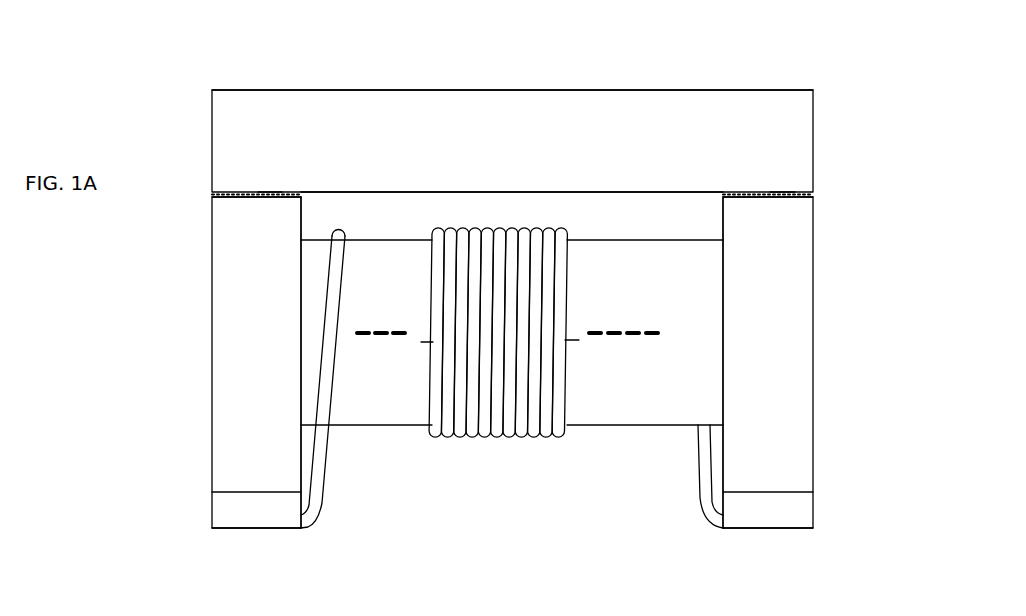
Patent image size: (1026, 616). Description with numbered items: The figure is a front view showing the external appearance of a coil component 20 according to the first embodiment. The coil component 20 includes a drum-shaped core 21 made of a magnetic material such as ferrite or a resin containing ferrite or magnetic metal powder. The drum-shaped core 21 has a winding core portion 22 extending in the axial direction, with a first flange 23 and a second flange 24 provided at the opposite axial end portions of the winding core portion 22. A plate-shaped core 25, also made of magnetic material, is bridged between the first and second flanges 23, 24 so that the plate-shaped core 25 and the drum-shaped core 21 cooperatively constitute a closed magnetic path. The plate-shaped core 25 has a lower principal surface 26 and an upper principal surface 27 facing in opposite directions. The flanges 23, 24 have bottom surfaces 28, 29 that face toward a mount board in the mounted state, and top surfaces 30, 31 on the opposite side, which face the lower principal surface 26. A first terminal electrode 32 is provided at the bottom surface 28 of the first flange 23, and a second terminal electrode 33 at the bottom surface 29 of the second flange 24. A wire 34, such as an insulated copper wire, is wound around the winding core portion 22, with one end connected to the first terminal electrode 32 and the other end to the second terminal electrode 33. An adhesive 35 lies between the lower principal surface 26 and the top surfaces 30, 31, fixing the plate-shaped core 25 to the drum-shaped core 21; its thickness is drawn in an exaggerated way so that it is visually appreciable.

The coil component 20 is at (522, 49).
The drum-shaped core 21 is at (822, 236).
The winding core portion 22 is at (618, 405).
The first flange 23 is at (210, 382).
The second flange 24 is at (817, 401).
The plate-shaped core 25 is at (818, 118).
The lower principal surface 26 is at (687, 192).
The upper principal surface 27 is at (663, 90).
The bottom surface 28 is at (248, 530).
The bottom surface 29 is at (768, 530).
The top surface 30 is at (270, 192).
The top surface 31 is at (783, 195).
The first terminal electrode 32 is at (218, 508).
The second terminal electrode 33 is at (802, 512).
The wire 34 is at (320, 498).
The adhesive 35 is at (212, 193).